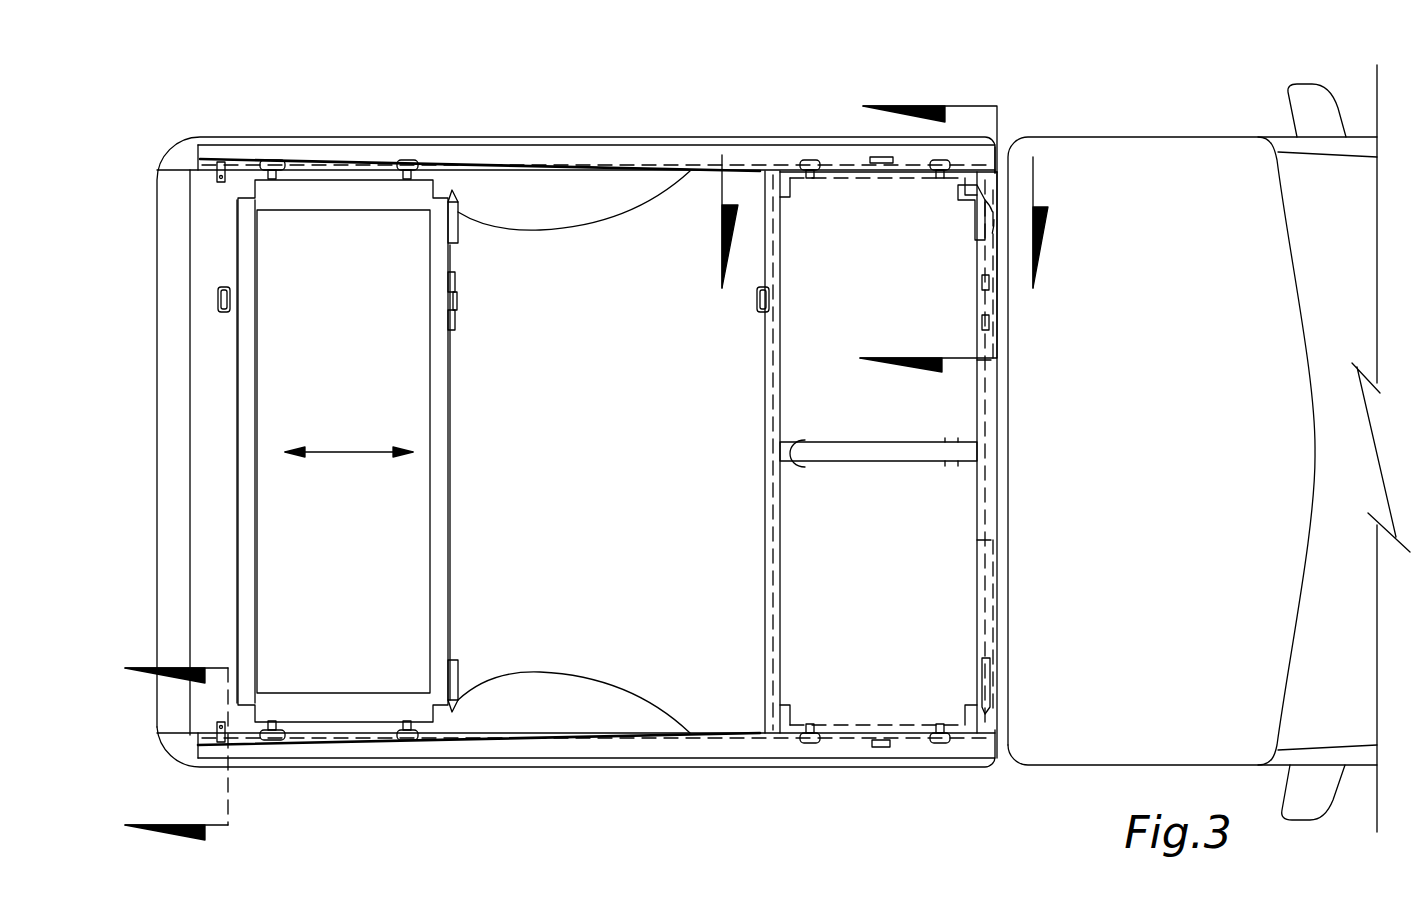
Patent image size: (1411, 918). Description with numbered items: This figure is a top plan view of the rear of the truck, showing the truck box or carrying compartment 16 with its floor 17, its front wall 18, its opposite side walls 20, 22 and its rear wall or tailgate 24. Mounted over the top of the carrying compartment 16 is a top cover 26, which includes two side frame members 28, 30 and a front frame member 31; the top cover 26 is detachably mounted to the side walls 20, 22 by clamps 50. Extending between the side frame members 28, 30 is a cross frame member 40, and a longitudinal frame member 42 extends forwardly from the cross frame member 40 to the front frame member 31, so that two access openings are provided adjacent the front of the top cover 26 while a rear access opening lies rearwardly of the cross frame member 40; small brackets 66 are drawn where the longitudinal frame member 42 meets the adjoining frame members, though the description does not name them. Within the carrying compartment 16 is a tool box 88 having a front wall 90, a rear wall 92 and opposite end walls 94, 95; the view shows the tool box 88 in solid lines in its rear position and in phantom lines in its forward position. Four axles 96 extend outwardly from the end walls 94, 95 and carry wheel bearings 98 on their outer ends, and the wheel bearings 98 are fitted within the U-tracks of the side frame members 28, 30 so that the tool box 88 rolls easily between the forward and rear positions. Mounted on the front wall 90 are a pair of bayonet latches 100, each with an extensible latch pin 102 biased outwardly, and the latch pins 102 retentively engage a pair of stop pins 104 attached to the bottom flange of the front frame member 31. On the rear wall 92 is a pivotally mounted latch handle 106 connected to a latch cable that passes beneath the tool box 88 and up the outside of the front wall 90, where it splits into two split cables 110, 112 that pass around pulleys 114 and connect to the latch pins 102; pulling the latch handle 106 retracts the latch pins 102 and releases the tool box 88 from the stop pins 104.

The truck box 16 is at (665, 220).
The floor 17 is at (585, 452).
The front wall 18 is at (997, 580).
The side wall 20 is at (615, 140).
The side wall 22 is at (492, 768).
The tailgate 24 is at (157, 455).
The top cover 26 is at (448, 148).
The side frame member 28 is at (535, 150).
The side frame member 30 is at (648, 745).
The front frame member 31 is at (978, 520).
The cross frame member 40 is at (780, 550).
The longitudinal frame member 42 is at (893, 462).
The clamp 50 is at (221, 184).
The shelf bracket 66 is at (800, 440).
The tool box 88 is at (235, 378).
The front wall 90 is at (450, 487).
The rear wall 92 is at (237, 497).
The end wall 94 is at (340, 170).
The end wall 95 is at (360, 734).
The axle 96 is at (403, 180).
The wheel bearing 98 is at (272, 158).
The bayonet latch 100 is at (448, 222).
The latch pin 102 is at (462, 195).
The stop pin 104 is at (975, 198).
The latch handle 106 is at (218, 299).
The split cable 110 is at (452, 263).
The split cable 112 is at (452, 395).
The pulley 114 is at (455, 282).